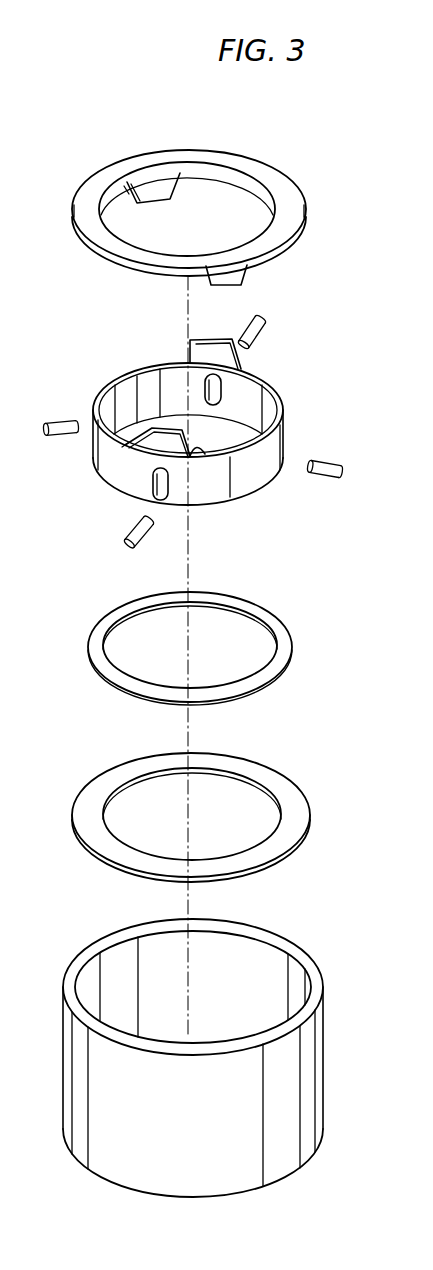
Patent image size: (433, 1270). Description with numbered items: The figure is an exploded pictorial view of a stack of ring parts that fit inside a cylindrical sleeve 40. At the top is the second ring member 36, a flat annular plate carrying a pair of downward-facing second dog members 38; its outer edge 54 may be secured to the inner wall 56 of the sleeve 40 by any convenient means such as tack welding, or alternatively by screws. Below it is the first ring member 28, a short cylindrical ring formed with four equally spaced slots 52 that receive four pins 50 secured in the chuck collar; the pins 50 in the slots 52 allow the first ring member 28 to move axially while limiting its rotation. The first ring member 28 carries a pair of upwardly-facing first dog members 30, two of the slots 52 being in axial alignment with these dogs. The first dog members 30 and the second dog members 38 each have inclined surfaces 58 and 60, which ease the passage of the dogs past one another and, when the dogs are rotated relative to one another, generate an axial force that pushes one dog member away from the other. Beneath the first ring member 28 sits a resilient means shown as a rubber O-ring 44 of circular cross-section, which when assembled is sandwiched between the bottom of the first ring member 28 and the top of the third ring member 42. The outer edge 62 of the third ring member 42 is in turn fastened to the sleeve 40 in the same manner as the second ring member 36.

The first ring member 28 is at (252, 482).
The first dog members 30 is at (167, 440).
The second ring member 36 is at (286, 188).
The second dog members 38 is at (157, 187).
The sleeve 40 is at (307, 1077).
The third ring member 42 is at (298, 805).
The O-ring 44 is at (280, 627).
The pins 50 is at (245, 322).
The slots 52 is at (218, 390).
The outer edge 54 is at (140, 272).
The inner wall 56 is at (92, 977).
The inclined surface 58 is at (135, 435).
The inclined surface 60 is at (200, 447).
The outer edge 62 is at (283, 856).